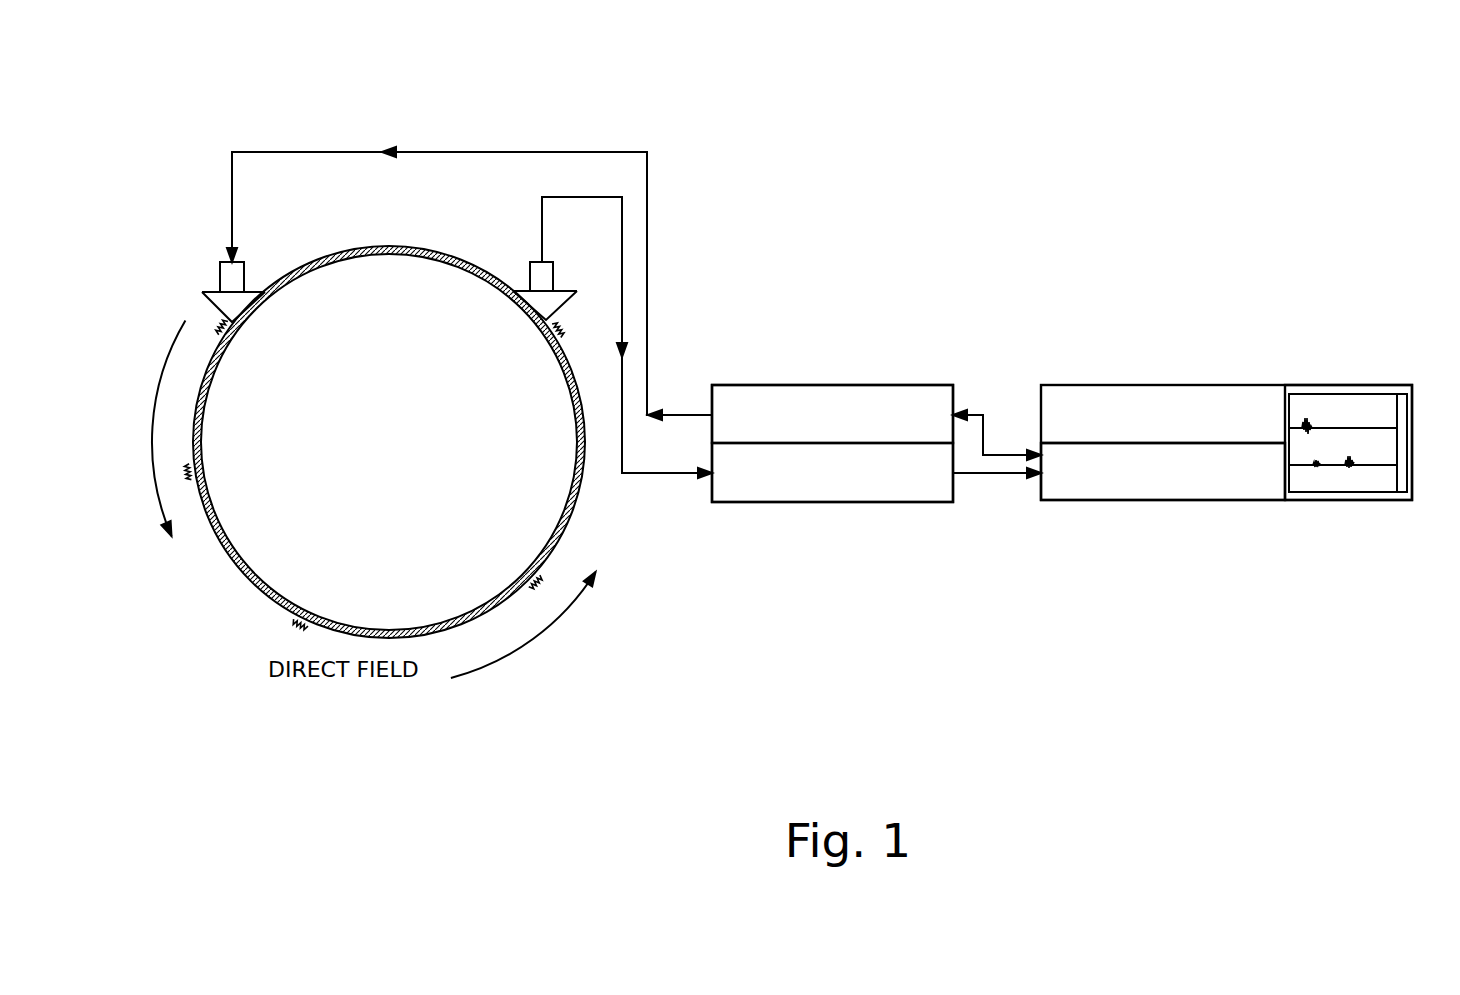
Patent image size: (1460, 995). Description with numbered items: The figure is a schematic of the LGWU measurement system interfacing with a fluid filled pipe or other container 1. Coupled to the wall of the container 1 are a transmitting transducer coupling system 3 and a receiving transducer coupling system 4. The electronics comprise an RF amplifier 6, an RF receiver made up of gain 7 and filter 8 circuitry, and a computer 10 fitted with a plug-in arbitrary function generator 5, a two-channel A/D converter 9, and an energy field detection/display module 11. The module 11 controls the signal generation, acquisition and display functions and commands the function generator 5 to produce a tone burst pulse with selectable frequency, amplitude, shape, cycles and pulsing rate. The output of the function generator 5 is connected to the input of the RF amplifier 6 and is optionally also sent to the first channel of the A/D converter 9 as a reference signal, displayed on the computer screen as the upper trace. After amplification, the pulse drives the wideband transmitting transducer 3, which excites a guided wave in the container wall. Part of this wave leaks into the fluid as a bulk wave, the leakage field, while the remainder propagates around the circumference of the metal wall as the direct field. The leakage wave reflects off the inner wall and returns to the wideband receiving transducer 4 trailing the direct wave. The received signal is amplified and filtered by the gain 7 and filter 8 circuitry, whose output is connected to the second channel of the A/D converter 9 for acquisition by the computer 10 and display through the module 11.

The fluid filled pipe or other container 1 is at (387, 298).
The transmitting transducer coupling system 3 is at (202, 292).
The receiving transducer coupling system 4 is at (530, 262).
The arbitrary function generator 5 is at (1133, 390).
The RF amplifier 6 is at (772, 393).
The RF receiver gain circuitry 7 is at (942, 469).
The RF receiver filter circuitry 8 is at (770, 475).
The 2-channel A/D converter 9 is at (1160, 480).
The computer 10 is at (1350, 392).
The energy field detection/display module 11 is at (1387, 482).